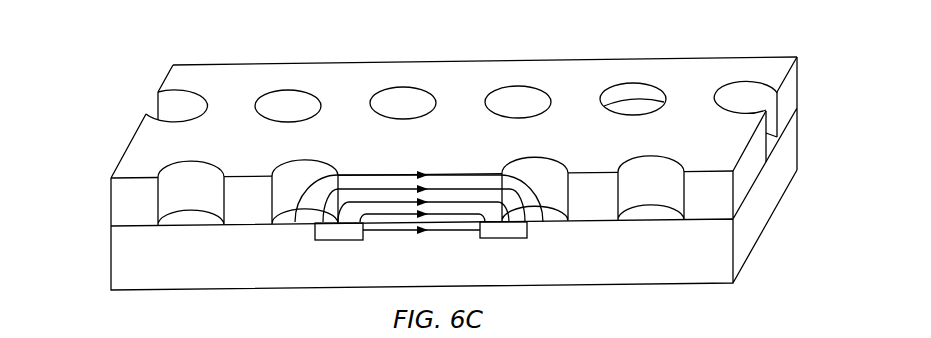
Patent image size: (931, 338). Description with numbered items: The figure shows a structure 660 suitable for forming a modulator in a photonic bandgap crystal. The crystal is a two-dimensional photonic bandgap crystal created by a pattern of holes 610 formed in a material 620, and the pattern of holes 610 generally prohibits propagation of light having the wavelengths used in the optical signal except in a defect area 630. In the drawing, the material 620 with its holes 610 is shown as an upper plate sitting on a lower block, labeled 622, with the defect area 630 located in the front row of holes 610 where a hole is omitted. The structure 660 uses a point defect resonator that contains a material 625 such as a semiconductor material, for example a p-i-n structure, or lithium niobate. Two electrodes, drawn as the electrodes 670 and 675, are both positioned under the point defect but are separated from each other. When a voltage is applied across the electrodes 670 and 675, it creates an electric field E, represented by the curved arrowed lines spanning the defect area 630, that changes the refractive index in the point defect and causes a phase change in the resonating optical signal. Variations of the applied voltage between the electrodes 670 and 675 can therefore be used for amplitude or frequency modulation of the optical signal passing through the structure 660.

The structure 660 is at (208, 45).
The holes 610 is at (287, 112).
The material 620 is at (807, 58).
The substrate / base block 622 is at (172, 268).
The material 625 is at (108, 203).
The defect area 630 is at (420, 158).
The first electrode 670 is at (338, 242).
The second electrode 675 is at (502, 239).
The electric field E is at (421, 241).